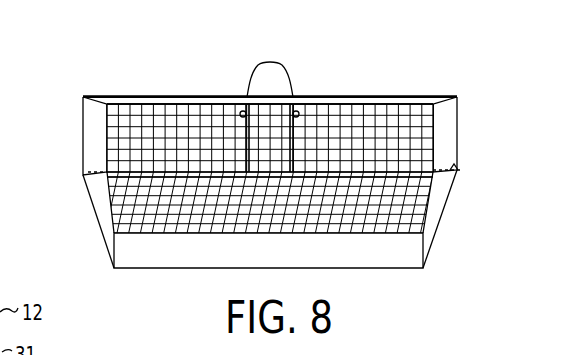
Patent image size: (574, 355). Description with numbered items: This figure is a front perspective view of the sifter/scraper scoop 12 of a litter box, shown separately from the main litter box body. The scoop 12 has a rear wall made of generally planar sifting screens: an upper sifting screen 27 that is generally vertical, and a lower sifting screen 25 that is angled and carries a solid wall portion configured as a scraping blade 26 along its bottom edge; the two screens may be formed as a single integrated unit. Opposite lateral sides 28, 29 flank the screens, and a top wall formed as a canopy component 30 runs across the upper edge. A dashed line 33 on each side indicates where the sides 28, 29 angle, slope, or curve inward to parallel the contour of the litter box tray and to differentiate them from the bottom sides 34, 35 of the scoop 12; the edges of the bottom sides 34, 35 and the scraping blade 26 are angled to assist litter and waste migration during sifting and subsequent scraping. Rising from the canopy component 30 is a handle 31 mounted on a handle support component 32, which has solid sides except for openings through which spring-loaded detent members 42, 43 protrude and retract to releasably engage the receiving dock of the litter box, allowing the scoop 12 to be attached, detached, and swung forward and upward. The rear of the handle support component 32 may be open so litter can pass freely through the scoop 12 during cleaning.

The sifter/scraper scoop 12 is at (109, 77).
The lower sifting screen 25 is at (186, 212).
The scraping blade 26 is at (281, 263).
The upper sifting screen 27 is at (178, 117).
The lateral side 28 is at (93, 128).
The lateral side 29 is at (448, 132).
The canopy component 30 is at (398, 97).
The handle 31 is at (268, 70).
The handle support component 32 is at (246, 133).
The dashed line 33 is at (90, 170).
The bottom side 34 is at (100, 197).
The bottom side 35 is at (445, 196).
The detent member 42 is at (243, 110).
The detent member 43 is at (297, 110).